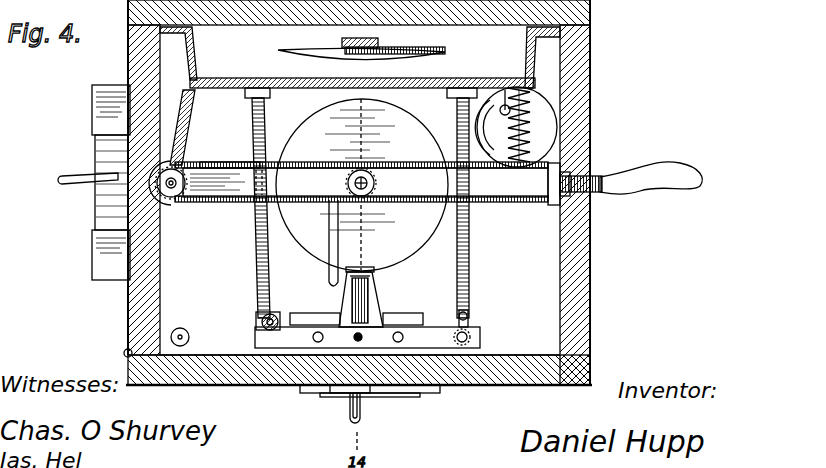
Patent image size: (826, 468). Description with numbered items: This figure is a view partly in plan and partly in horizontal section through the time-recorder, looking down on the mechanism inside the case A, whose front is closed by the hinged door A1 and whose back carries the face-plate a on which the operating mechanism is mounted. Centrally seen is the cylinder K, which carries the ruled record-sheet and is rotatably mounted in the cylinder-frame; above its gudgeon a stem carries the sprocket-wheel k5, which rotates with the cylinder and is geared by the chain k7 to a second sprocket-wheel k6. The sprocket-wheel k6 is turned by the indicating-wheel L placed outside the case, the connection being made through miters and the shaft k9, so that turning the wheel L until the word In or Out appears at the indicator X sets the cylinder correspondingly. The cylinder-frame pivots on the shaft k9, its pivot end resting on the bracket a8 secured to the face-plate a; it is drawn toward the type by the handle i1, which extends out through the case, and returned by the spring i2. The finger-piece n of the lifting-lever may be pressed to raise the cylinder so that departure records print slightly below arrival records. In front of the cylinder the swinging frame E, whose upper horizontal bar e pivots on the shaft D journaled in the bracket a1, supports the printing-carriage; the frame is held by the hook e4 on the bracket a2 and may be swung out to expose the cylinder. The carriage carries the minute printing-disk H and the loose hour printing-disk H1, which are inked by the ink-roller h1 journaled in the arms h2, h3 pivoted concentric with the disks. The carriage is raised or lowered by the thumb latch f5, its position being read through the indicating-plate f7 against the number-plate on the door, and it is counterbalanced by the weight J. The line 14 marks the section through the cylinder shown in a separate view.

The inclosing frame or case A is at (580, 96).
The face-plate a is at (556, 42).
The section line 14 14 is at (361, 57).
The bracket a8 is at (177, 125).
The spring i2 is at (522, 128).
The indicating-wheel L is at (80, 208).
The second sprocket-wheel k6 is at (172, 196).
The shaft k9 is at (182, 192).
The chain k7 is at (230, 162).
The sprocket-wheel k5 is at (380, 184).
The bracket a1 is at (259, 249).
The bracket a2 is at (470, 253).
The cylinder K is at (362, 185).
The hour printing-disk H1 is at (336, 293).
The minute printing-disk H is at (372, 290).
The ink-roller h1 is at (370, 273).
The arm h2 is at (385, 322).
The arm h3 is at (290, 314).
The shaft D is at (261, 323).
The weight J is at (180, 327).
The swinging frame E is at (440, 345).
The horizontal bar e is at (440, 338).
The hook e4 is at (466, 322).
The thumb spring or latch f5 is at (362, 410).
The indicating-plate f7 is at (339, 404).
The door A1 is at (226, 378).
The finger-piece n is at (606, 180).
The handle i1 is at (704, 181).
The indicator X is at (112, 182).